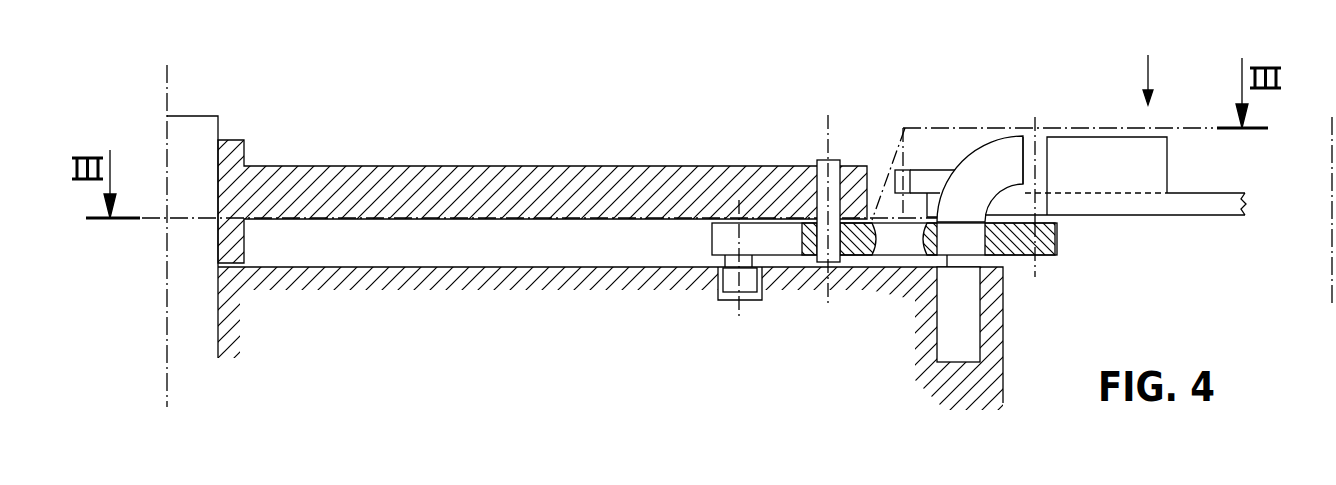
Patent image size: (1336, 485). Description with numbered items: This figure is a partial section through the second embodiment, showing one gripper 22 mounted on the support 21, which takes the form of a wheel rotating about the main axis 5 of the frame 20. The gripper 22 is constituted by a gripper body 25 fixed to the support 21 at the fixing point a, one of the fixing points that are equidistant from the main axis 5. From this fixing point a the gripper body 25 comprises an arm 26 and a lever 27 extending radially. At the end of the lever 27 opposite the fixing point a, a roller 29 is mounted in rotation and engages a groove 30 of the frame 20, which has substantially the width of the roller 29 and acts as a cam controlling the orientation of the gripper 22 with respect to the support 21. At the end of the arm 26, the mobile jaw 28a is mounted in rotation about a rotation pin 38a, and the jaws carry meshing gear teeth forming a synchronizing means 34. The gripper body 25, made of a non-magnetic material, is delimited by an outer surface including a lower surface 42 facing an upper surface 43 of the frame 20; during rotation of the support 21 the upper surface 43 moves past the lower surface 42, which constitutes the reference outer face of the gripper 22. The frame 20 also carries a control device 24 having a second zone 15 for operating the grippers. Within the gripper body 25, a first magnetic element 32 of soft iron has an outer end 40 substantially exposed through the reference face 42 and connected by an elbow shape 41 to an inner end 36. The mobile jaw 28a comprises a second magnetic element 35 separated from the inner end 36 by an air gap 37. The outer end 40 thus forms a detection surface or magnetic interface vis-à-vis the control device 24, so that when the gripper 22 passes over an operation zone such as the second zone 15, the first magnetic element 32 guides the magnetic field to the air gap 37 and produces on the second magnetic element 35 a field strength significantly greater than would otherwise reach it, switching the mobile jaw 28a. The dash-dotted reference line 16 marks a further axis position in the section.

The main axis 5 is at (170, 86).
The frame 20 is at (500, 353).
The support 21 is at (408, 173).
The lever 27 is at (781, 245).
The upper surface 43 is at (886, 262).
The lower surface 42 is at (896, 250).
The arm 26 is at (910, 245).
The gripper body 25 is at (1057, 248).
The fixing point a is at (822, 128).
The roller 29 is at (730, 288).
The groove 30 is at (758, 300).
The synchronizing means 34 is at (895, 182).
The elbow shape 41 is at (965, 180).
The first magnetic element 32 is at (972, 152).
The second magnetic element 35 is at (1090, 150).
The mobile jaw 28a is at (1200, 207).
The second zone 15 is at (977, 260).
The inner end 36 is at (1033, 128).
The rotation pin 38a is at (1038, 273).
The air gap 37 is at (1040, 137).
The gripper 22 is at (1151, 67).
The axis 16 is at (1327, 130).
The control device 24 is at (970, 318).
The outer end 40 is at (945, 270).